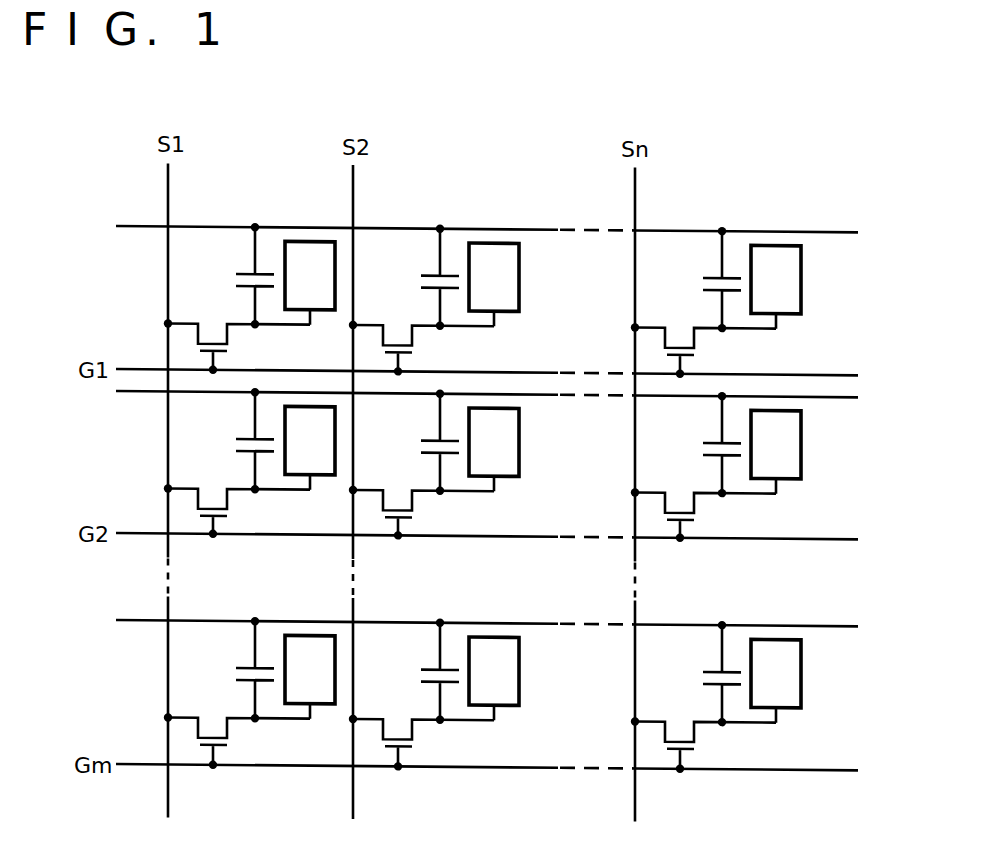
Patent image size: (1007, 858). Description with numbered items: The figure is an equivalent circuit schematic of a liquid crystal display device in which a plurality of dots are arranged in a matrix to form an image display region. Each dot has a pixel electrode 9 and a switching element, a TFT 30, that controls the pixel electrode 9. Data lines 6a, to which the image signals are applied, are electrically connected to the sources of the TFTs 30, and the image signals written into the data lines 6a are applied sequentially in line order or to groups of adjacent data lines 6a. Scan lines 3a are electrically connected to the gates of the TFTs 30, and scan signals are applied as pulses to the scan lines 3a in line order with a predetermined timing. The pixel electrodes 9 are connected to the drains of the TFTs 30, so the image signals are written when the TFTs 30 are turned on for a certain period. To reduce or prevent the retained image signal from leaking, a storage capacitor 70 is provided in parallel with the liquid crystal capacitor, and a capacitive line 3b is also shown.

The data line 6a is at (682, 176).
The capacitive line 3b is at (856, 654).
The scan line 3a is at (850, 746).
The storage capacitor 70 is at (232, 280).
The pixel electrode 9 is at (503, 311).
The TFT 30 is at (229, 331).